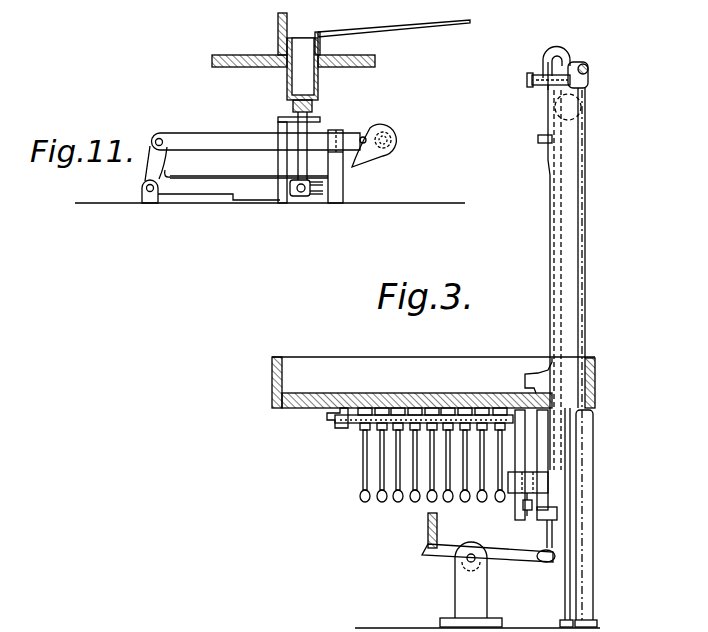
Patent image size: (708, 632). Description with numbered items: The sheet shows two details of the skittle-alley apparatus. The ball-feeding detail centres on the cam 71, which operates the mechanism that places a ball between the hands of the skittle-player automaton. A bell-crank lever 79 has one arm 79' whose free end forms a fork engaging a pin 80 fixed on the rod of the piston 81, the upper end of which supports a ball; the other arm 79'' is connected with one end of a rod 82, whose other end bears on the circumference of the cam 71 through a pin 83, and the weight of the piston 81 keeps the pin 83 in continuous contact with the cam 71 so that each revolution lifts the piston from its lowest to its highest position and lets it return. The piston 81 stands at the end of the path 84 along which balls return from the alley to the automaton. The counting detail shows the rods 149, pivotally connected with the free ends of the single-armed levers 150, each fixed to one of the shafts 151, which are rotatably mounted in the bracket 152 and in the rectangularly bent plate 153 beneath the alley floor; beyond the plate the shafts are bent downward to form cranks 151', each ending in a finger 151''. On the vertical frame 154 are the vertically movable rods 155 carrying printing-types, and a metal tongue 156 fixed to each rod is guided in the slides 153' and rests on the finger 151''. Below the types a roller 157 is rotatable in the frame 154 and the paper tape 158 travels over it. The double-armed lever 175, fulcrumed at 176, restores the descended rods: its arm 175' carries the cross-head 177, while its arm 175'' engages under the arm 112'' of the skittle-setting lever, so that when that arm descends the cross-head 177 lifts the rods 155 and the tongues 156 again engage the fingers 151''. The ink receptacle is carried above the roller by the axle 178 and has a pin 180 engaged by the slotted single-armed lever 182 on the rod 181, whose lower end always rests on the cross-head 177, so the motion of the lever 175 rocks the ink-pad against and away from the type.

In FIG. 11, the cam 71 is at (399, 142).
In FIG. 11, the bell-crank lever 79 is at (246, 167).
In FIG. 11, the lever arm 79' is at (219, 209).
In FIG. 11, the lever arm 79'' is at (131, 174).
In FIG. 11, the pin 80 is at (303, 190).
In FIG. 11, the piston 81 is at (318, 78).
In FIG. 11, the rod 82 is at (202, 138).
In FIG. 11, the pin 83 is at (364, 137).
In FIG. 11, the path 84 is at (453, 25).
In FIG. 3, the lever arm 112'' is at (399, 535).
In FIG. 3, the rods 149 is at (397, 502).
In FIG. 3, the single-armed levers 150 is at (397, 470).
In FIG. 3, the shafts 151 is at (410, 440).
In FIG. 3, the cranks 151' is at (526, 426).
In FIG. 3, the finger 151'' is at (520, 520).
In FIG. 3, the bracket 152 is at (327, 412).
In FIG. 3, the rectangularly bent plate 153 is at (505, 280).
In FIG. 3, the slides 153' is at (575, 465).
In FIG. 3, the vertical frame 154 is at (586, 152).
In FIG. 3, the vertically movable rods 155 is at (560, 60).
In FIG. 3, the metal tongue 156 is at (535, 485).
In FIG. 3, the roller 157 is at (578, 108).
In FIG. 3, the strip of paper or tape 158 is at (583, 240).
In FIG. 3, the double-armed lever 175 is at (487, 570).
In FIG. 3, the lever arm 175' is at (524, 586).
In FIG. 3, the lever arm 175'' is at (404, 569).
In FIG. 3, the fulcrum 176 is at (469, 560).
In FIG. 3, the cross-head 177 is at (547, 563).
In FIG. 3, the axle 178 is at (588, 71).
In FIG. 3, the pin 180 is at (580, 86).
In FIG. 3, the rod 181 is at (552, 85).
In FIG. 3, the single-armed lever 182 is at (547, 77).